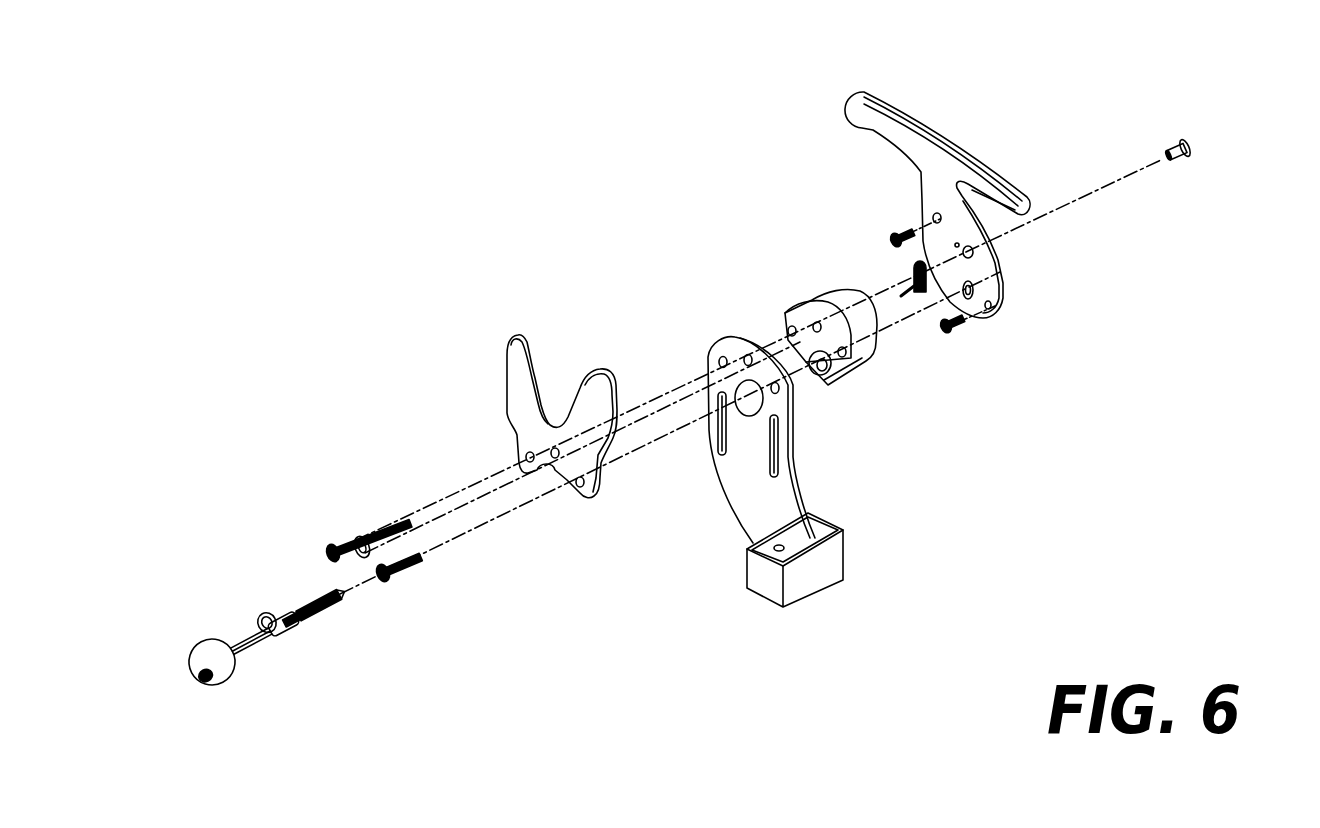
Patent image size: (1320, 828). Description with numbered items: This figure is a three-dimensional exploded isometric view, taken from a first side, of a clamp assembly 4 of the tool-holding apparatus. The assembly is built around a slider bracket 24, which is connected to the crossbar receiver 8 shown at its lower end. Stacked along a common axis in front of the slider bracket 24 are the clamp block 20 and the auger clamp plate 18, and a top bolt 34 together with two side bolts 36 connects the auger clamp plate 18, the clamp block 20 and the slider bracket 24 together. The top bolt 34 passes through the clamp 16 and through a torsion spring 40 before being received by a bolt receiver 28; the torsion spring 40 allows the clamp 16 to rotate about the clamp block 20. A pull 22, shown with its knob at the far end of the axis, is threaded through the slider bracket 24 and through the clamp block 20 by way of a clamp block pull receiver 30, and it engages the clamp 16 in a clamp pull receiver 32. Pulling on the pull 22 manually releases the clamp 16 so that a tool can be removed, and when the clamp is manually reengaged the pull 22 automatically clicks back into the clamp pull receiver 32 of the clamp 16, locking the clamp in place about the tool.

The handle assembly 4 is at (440, 152).
The crossbar receiver 8 is at (838, 532).
The clamp 16 is at (942, 125).
The auger clamp plate 18 is at (507, 358).
The clamp block 20 is at (828, 292).
The pull 22 is at (203, 640).
The slider bracket 24 is at (796, 465).
The bolt receiver 28 is at (1195, 140).
The clamp block pull receiver 30 is at (820, 386).
The clamp pull receiver 32 is at (977, 292).
The top bolt 34 is at (353, 557).
The side bolts 36 is at (333, 545).
The torsion spring 40 is at (910, 282).